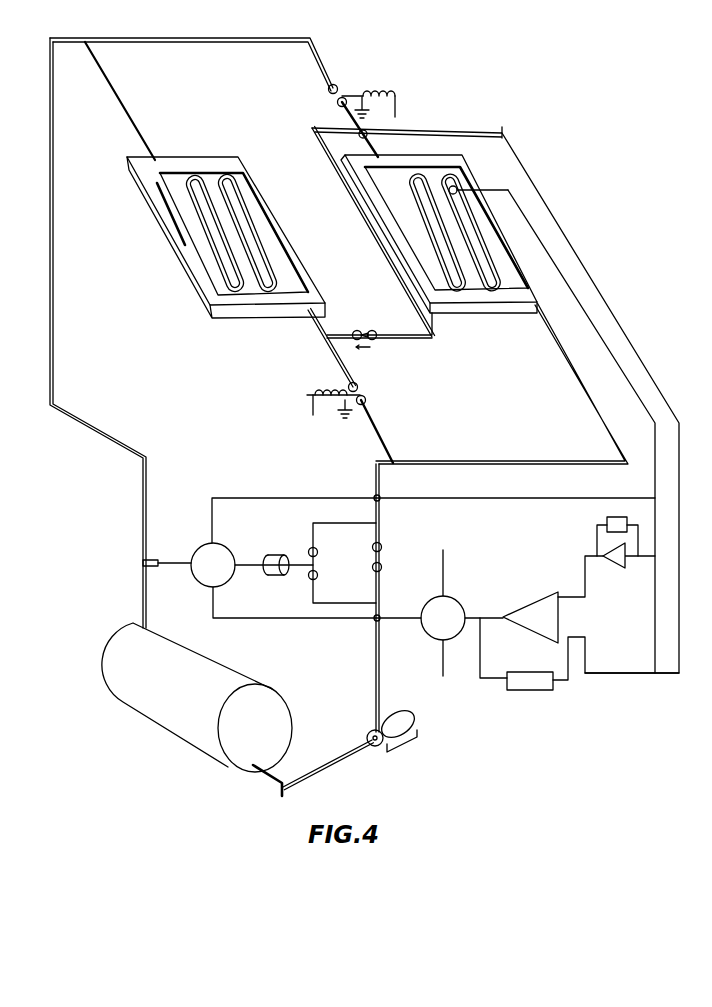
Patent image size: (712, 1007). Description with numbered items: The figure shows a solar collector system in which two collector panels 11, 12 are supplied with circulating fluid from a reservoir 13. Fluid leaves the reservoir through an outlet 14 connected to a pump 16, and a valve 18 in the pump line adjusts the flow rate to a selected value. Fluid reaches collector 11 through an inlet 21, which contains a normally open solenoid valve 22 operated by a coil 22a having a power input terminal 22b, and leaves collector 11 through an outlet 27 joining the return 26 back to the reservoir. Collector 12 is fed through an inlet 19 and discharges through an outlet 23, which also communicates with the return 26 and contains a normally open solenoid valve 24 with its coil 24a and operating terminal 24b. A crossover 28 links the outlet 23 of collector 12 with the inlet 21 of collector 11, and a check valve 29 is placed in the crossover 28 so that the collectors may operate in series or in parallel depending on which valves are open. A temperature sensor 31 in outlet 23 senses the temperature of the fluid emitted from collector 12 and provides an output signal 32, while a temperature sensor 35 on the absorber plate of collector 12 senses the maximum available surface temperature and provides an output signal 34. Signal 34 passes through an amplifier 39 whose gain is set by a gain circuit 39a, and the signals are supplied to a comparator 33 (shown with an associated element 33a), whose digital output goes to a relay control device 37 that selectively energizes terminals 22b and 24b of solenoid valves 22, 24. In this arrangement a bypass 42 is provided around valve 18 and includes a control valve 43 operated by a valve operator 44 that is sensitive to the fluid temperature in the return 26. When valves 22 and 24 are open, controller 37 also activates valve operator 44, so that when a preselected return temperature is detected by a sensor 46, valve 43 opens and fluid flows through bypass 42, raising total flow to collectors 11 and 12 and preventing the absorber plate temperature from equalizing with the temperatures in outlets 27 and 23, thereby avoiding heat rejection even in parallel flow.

The collector panel 11 is at (160, 173).
The collector panel 12 is at (470, 288).
The reservoir 13 is at (197, 697).
The outlet 14 is at (357, 757).
The pump 16 is at (412, 744).
The valve 18 is at (413, 545).
The inlet 19 is at (570, 377).
The inlet 21 is at (320, 330).
The solenoid valve 22 is at (355, 388).
The coil 22a is at (327, 389).
The power input terminal 22b is at (313, 415).
The outlet 23 is at (370, 133).
The solenoid valve 24 is at (329, 87).
The coil 24a is at (393, 74).
The operating terminal 24b is at (395, 117).
The return 26 is at (268, 38).
The outlet 27 is at (110, 83).
The crossover 28 is at (299, 172).
The check valve 29 is at (372, 306).
The temperature sensor 31 is at (405, 136).
The output signal 32 is at (549, 208).
The comparator 33 is at (535, 615).
The resistor 33a is at (522, 680).
The output signal 34 is at (597, 340).
The temperature sensor 35 is at (478, 176).
The relay control device 37 is at (462, 613).
The amplifier 39 is at (628, 556).
The gain circuit 39a is at (607, 522).
The bypass 42 is at (318, 512).
The control valve 43 is at (310, 568).
The valve operator 44 is at (423, 558).
The sensor 46 is at (143, 562).